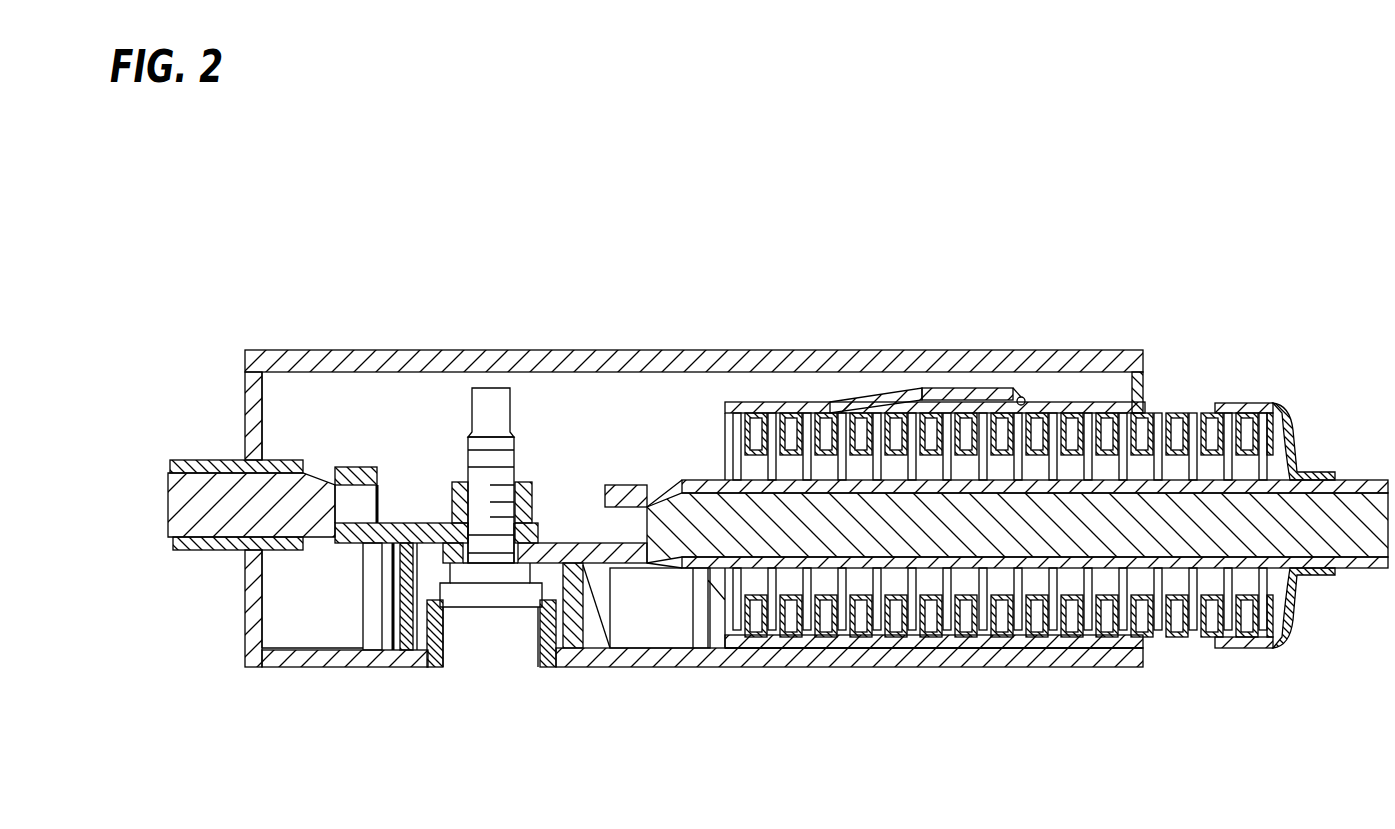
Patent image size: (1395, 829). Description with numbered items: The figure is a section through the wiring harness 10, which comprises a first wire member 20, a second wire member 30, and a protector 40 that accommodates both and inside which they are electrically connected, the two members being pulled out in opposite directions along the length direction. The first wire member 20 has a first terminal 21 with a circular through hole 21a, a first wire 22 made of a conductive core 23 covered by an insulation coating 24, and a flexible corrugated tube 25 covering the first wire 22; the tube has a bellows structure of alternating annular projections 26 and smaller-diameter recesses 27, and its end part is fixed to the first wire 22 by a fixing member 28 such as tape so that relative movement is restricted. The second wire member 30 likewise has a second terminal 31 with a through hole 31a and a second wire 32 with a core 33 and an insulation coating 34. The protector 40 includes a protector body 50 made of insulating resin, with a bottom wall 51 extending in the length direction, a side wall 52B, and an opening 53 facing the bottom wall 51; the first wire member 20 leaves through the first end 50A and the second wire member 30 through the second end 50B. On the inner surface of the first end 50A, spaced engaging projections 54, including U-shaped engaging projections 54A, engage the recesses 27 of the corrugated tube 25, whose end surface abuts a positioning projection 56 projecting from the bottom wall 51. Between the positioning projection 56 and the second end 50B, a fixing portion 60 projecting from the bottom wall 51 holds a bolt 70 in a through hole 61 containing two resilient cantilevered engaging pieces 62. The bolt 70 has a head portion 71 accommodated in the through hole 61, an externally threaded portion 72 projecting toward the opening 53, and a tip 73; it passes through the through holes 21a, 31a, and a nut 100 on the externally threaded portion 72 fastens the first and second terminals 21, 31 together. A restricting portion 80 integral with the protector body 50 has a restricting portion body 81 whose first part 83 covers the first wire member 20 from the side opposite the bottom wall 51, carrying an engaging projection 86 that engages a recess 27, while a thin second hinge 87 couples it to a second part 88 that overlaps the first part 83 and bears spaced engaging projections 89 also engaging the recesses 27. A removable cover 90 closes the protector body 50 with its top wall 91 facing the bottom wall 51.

The wiring harness 10 is at (1232, 168).
The first wire member 20 is at (1372, 480).
The first terminal 21 is at (628, 486).
The through hole 21a is at (503, 575).
The first wire 22 is at (1350, 634).
The core 23 is at (1330, 568).
The insulation coating 24 is at (1372, 568).
The corrugated tube 25 is at (1212, 403).
The projections 26 is at (1143, 415).
The recesses 27 is at (1165, 400).
The fixing member 28 is at (1290, 440).
The second wire member 30 is at (245, 536).
The second terminal 31 is at (345, 467).
The through hole 31a is at (505, 520).
The second wire 32 is at (235, 630).
The core 33 is at (193, 550).
The insulation coating 34 is at (228, 550).
The protector 40 is at (1095, 275).
The protector body 50 is at (840, 672).
The first end 50A is at (1060, 650).
The second end 50B is at (270, 660).
The bottom wall 51 is at (690, 650).
The side wall 52B is at (330, 650).
The opening 53 is at (270, 560).
The engaging projections 54 is at (1098, 648).
The engaging projections 54A is at (1150, 648).
The positioning projection 56 is at (708, 625).
The fixing portion 60 is at (400, 605).
The through hole 61 is at (580, 545).
The engaging pieces 62 is at (435, 667).
The bolt 70 is at (493, 472).
The head portion 71 is at (470, 610).
The externally threaded portion 72 is at (478, 450).
The tip 73 is at (488, 393).
The restricting portion 80 is at (760, 400).
The restricting portion body 81 is at (1020, 397).
The first part 83 is at (985, 402).
The engaging projection 86 is at (935, 415).
The second hinge 87 is at (1028, 398).
The second part 88 is at (835, 410).
The engaging projections 89 is at (880, 412).
The cover 90 is at (1137, 350).
The top wall 91 is at (655, 352).
The nut 100 is at (452, 496).